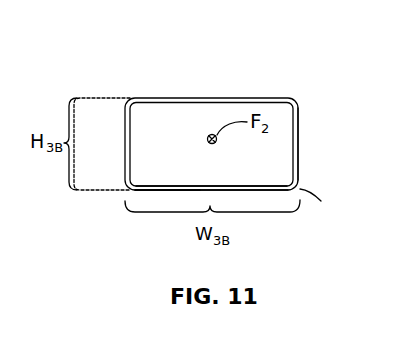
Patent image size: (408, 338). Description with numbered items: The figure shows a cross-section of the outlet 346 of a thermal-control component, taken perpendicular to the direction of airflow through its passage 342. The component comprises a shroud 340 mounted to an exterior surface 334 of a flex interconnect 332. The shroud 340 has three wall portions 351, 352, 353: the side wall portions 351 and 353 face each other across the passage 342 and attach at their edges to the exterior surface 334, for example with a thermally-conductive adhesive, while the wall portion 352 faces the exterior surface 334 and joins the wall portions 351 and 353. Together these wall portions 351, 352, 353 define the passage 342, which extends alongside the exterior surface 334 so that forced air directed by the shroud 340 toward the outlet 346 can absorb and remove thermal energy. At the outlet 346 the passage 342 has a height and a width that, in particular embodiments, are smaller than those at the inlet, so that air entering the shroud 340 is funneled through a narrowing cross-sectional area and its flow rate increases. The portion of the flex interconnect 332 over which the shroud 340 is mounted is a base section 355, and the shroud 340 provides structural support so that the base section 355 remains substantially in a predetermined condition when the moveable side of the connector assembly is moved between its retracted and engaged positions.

The outlet 346 is at (303, 62).
The shroud 340 is at (157, 98).
The wall portion 352 is at (223, 92).
The wall portion 353 is at (304, 125).
The flex interconnect 332 is at (278, 188).
The exterior surface 334 is at (214, 180).
The passage 342 is at (183, 152).
The base section 355 is at (160, 189).
The wall portion 351 is at (120, 142).